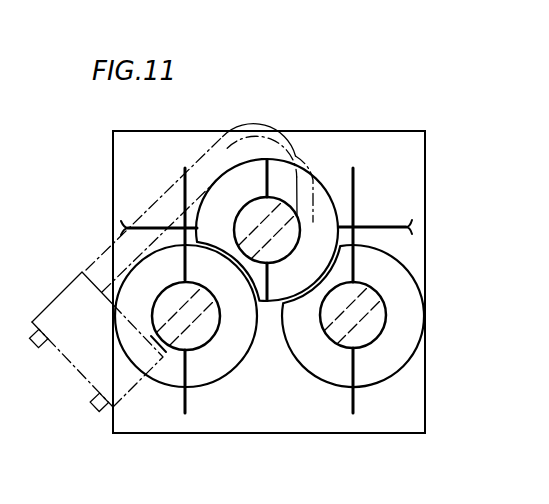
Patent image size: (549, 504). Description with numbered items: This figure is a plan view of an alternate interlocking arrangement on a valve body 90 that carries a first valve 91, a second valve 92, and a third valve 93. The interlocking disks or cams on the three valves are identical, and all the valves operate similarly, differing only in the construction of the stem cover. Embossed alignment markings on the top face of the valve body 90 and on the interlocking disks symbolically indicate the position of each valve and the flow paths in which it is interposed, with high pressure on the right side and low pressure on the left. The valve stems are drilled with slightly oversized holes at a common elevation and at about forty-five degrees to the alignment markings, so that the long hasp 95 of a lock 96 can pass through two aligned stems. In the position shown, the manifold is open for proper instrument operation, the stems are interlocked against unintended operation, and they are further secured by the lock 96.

The valve body 90 is at (307, 412).
The first valve 91 is at (206, 343).
The second valve 92 is at (373, 328).
The third valve 93 is at (300, 232).
The hasp 95 is at (254, 122).
The lock 96 is at (86, 364).